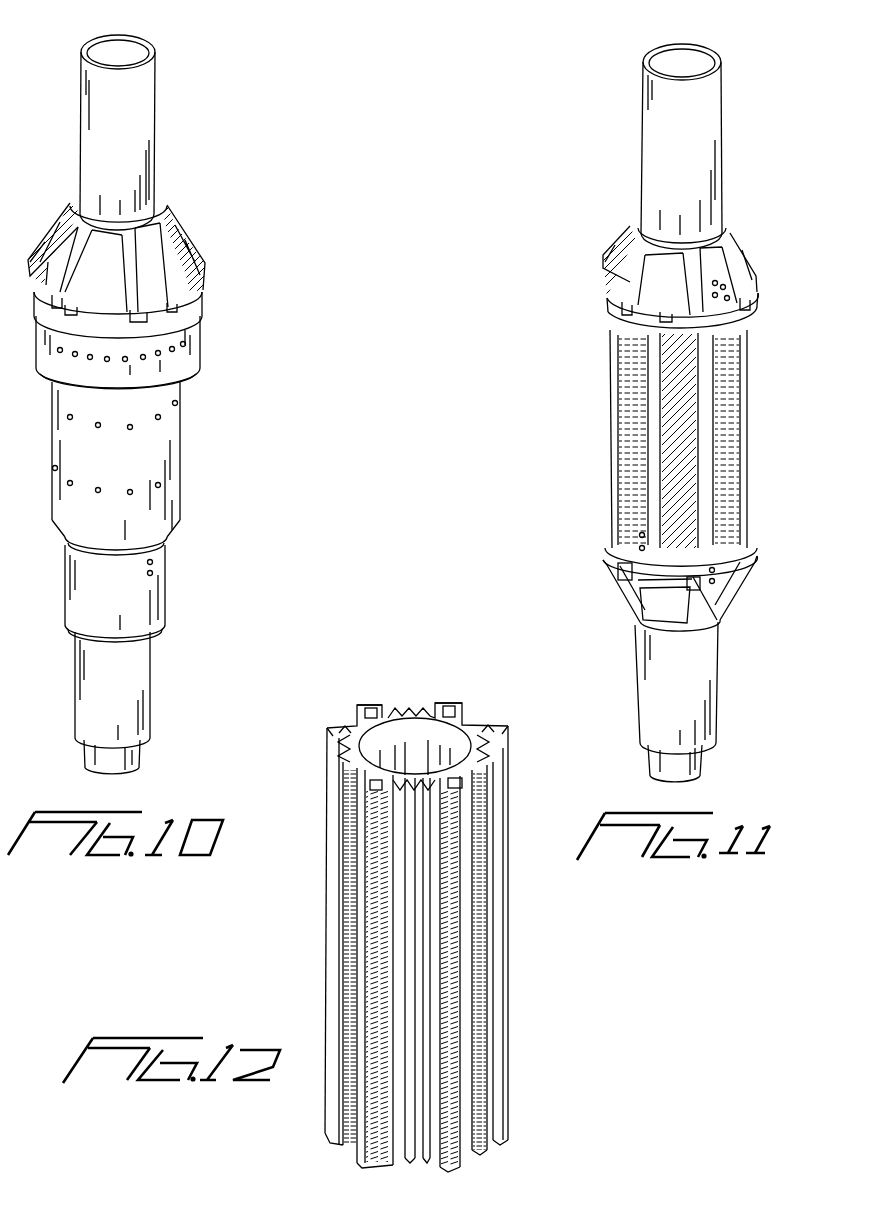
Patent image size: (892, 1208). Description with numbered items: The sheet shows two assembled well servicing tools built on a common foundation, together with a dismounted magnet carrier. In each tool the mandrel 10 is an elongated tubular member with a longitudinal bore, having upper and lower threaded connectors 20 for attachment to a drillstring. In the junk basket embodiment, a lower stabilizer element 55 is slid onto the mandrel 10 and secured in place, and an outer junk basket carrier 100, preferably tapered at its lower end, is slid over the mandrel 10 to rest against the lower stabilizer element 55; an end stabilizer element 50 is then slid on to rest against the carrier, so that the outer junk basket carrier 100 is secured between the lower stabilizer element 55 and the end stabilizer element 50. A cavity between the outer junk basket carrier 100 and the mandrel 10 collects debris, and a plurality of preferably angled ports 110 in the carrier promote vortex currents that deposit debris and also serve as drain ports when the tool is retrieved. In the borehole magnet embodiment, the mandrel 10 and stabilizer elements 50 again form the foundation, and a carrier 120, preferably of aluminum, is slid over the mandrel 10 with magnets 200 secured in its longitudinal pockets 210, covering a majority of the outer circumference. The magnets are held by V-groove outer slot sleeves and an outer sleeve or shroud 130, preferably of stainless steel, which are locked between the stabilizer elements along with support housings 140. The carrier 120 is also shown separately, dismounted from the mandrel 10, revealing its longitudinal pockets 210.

In FIG. 10, the mandrel 10 is at (148, 153).
In FIG. 11, the mandrel 10 is at (705, 142).
In FIG. 10, the threaded connectors 20 is at (135, 50).
In FIG. 11, the threaded connectors 20 is at (663, 62).
In FIG. 10, the end stabilizer element 50 is at (203, 232).
In FIG. 11, the end stabilizer element 50 is at (633, 230).
In FIG. 10, the lower stabilizer element 55 is at (152, 593).
In FIG. 10, the outer junk basket carrier 100 is at (163, 442).
In FIG. 10, the ports 110 is at (133, 430).
In FIG. 12, the carrier 120 is at (485, 1047).
In FIG. 11, the outer sleeve or shroud 130 is at (615, 480).
In FIG. 11, the support housings 140 is at (733, 288).
In FIG. 11, the magnets 200 is at (635, 360).
In FIG. 12, the longitudinal pockets 210 is at (360, 710).